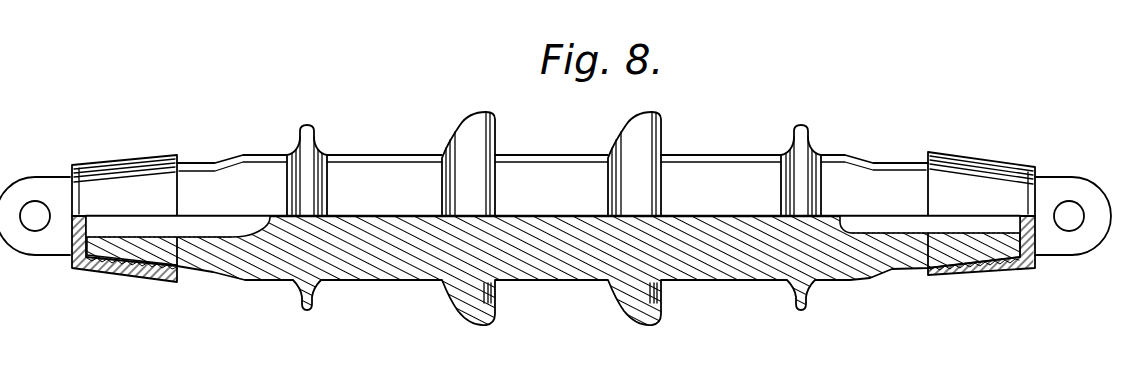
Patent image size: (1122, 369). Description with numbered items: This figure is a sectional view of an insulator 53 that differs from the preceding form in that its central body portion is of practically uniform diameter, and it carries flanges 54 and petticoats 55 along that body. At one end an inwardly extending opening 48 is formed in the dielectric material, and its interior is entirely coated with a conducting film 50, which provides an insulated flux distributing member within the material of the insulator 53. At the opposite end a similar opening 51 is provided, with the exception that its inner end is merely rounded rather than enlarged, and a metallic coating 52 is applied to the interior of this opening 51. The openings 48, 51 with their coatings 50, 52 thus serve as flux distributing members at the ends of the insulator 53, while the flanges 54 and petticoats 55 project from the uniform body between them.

The inwardly extending opening 48 is at (183, 223).
The conducting film 50 is at (210, 230).
The opening 51 is at (878, 223).
The metallic coating 52 is at (927, 226).
The insulator 53 is at (406, 260).
The flanges 54 is at (316, 131).
The petticoats 55 is at (647, 122).